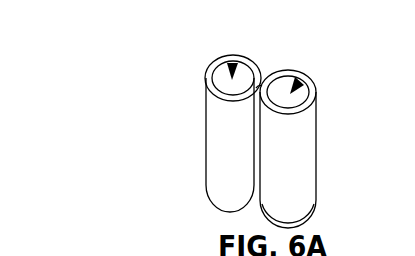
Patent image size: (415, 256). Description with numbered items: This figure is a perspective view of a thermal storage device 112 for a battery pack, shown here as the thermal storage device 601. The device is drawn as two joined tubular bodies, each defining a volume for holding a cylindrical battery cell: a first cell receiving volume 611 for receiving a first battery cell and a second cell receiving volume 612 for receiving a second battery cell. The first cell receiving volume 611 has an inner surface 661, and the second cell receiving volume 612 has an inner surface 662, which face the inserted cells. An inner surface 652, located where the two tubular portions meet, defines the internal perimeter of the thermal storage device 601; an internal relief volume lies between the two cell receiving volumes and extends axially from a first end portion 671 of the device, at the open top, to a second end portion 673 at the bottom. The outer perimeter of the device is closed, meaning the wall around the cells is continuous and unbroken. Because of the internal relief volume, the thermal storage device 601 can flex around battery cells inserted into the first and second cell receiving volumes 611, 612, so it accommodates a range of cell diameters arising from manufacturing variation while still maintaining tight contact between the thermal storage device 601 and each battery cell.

The thermal storage device 112 is at (113, 28).
The thermal storage device 601 is at (207, 160).
The first cell receiving volume 611 is at (227, 60).
The inner surface 661 is at (222, 78).
The inner surface 652 is at (266, 72).
The inner surface 662 is at (290, 77).
The second cell receiving volume 612 is at (302, 72).
The first end portion 671 is at (312, 97).
The second end portion 673 is at (302, 221).